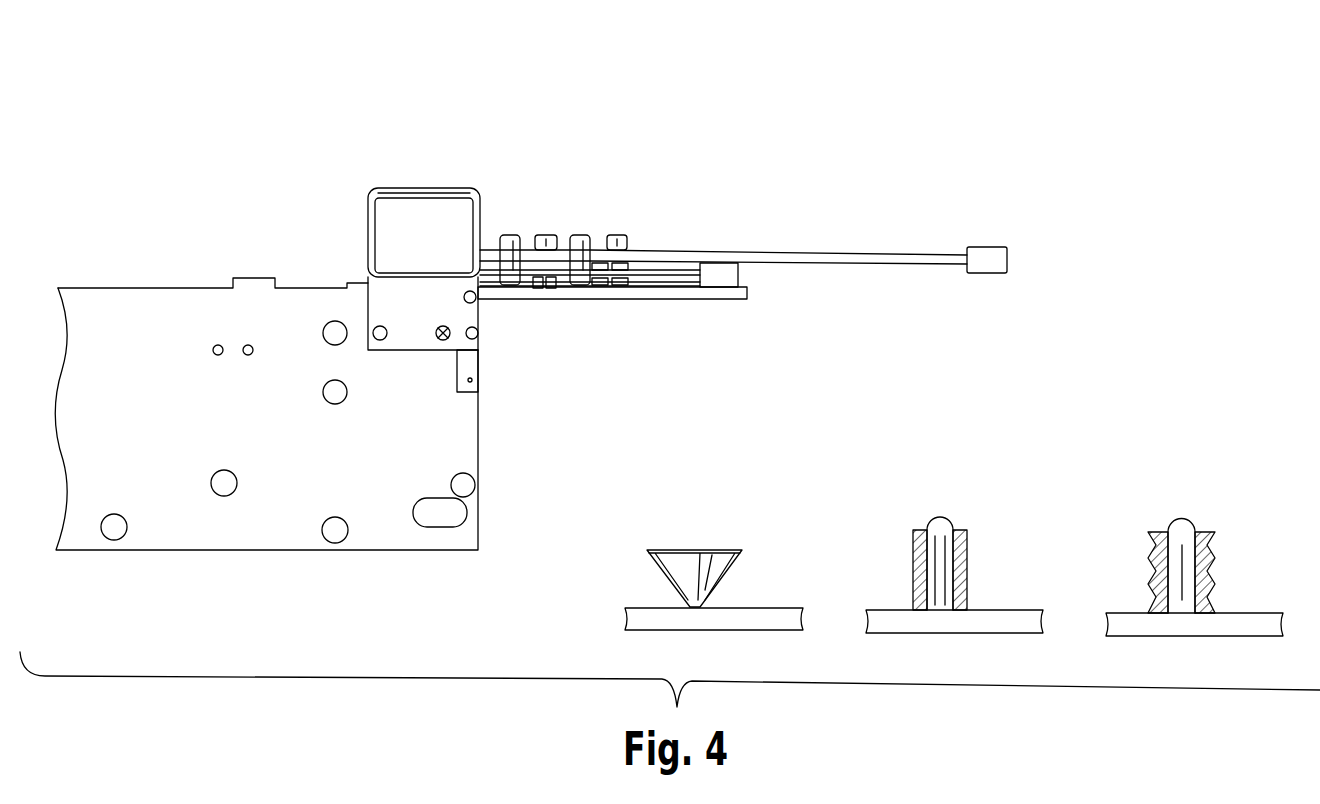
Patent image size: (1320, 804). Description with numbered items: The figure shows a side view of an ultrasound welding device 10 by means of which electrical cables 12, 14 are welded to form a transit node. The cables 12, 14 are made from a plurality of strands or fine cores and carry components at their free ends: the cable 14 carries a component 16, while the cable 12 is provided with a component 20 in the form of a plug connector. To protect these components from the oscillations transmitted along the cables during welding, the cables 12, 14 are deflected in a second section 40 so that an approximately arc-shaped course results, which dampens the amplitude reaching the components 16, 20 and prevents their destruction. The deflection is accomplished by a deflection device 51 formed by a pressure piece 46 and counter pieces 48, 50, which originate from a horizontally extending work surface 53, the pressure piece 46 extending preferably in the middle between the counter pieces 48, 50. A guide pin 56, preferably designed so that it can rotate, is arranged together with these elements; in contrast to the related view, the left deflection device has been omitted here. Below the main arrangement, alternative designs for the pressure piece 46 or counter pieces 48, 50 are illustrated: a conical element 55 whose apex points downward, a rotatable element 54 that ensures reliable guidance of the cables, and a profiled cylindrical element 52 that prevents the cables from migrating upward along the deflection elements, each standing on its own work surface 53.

The ultrasound welding device 10 is at (300, 134).
The electrical cable 12 is at (893, 253).
The electrical cable 14 is at (643, 275).
The component 16 is at (717, 275).
The component 20 is at (985, 262).
The second section 40 is at (540, 288).
The pressure piece 46 is at (542, 235).
The counter piece 48 is at (505, 235).
The counter piece 50 is at (578, 235).
The deflection device 51 is at (586, 312).
The cylindrical element 52 is at (1210, 556).
The work surface 53 is at (668, 283).
The rotatable element 54 is at (965, 560).
The conical element 55 is at (715, 550).
The guide pin 56 is at (617, 235).